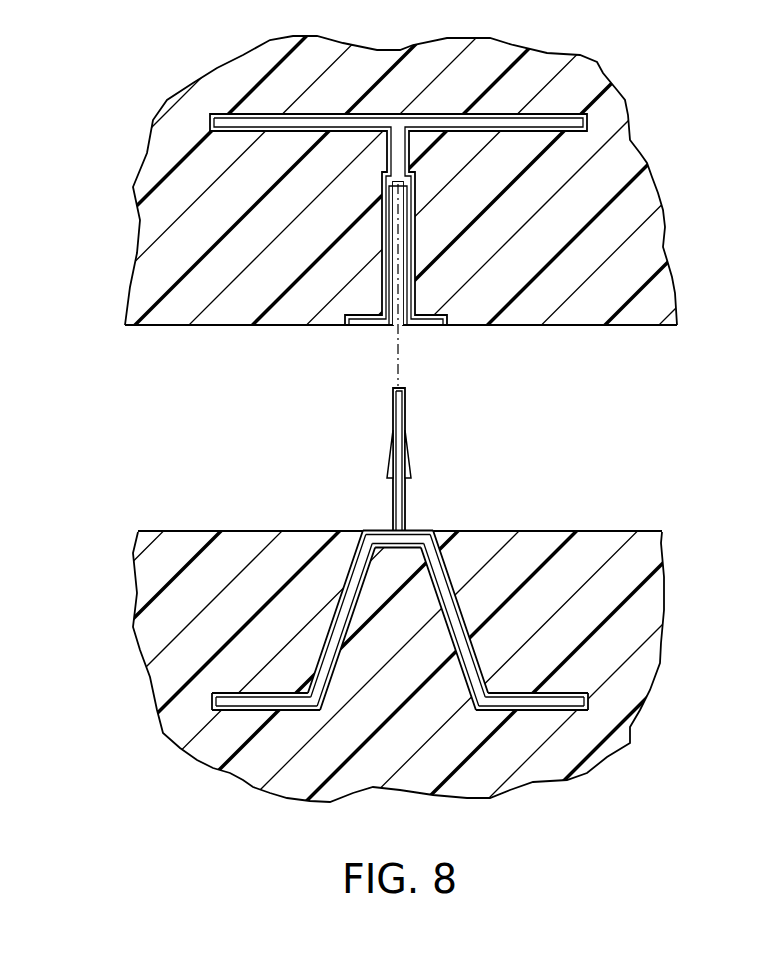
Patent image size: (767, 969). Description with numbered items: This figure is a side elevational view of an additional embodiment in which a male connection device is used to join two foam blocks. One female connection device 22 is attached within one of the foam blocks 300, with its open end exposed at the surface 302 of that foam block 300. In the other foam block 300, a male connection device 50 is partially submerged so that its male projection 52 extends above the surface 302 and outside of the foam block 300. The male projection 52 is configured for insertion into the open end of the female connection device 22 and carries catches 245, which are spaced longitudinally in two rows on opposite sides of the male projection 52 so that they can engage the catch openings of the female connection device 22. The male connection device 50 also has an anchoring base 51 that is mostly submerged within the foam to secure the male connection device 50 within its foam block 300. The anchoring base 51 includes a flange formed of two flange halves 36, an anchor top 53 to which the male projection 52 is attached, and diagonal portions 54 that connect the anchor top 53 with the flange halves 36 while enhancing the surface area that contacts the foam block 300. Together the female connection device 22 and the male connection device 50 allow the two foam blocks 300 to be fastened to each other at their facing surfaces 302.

The female connection device 22 is at (368, 342).
The flange halves 36 is at (233, 710).
The male connection device 50 is at (449, 547).
The anchoring base 51 is at (413, 530).
The male projection 52 is at (406, 398).
The anchor top 53 is at (385, 531).
The diagonal portions 54 is at (340, 592).
The catches 245 is at (389, 462).
The foam blocks 300 is at (651, 172).
The surface 302 is at (630, 327).